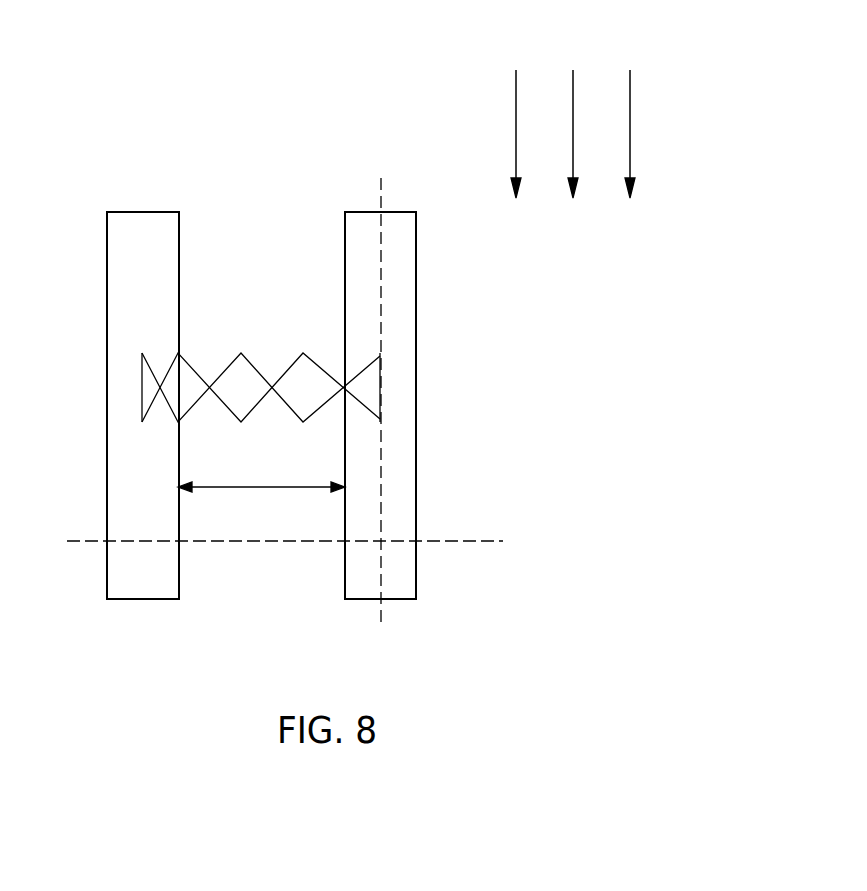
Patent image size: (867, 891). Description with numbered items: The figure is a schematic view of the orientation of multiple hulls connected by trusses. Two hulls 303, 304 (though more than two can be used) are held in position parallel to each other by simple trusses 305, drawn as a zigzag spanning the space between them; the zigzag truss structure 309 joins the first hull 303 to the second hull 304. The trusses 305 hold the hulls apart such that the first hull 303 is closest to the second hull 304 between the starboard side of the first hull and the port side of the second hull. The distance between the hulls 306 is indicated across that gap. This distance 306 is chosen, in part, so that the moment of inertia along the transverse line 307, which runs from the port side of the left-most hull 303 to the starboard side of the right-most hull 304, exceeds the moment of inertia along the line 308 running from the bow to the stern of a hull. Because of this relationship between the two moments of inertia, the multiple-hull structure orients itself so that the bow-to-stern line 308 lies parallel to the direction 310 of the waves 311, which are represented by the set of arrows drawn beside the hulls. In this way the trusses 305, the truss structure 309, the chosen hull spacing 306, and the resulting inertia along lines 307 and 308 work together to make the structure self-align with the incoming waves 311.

The hull 303 is at (143, 212).
The hull 304 is at (381, 212).
The trusses 305 is at (261, 468).
The distance between the hulls 306 is at (258, 519).
The line from port side of left-most hull to starboard side of right-most hull 307 is at (315, 542).
The line from bow to stern of a hull 308 is at (380, 424).
The spring 309 is at (261, 387).
The direction of the waves 310 is at (574, 241).
The waves 311 is at (607, 134).